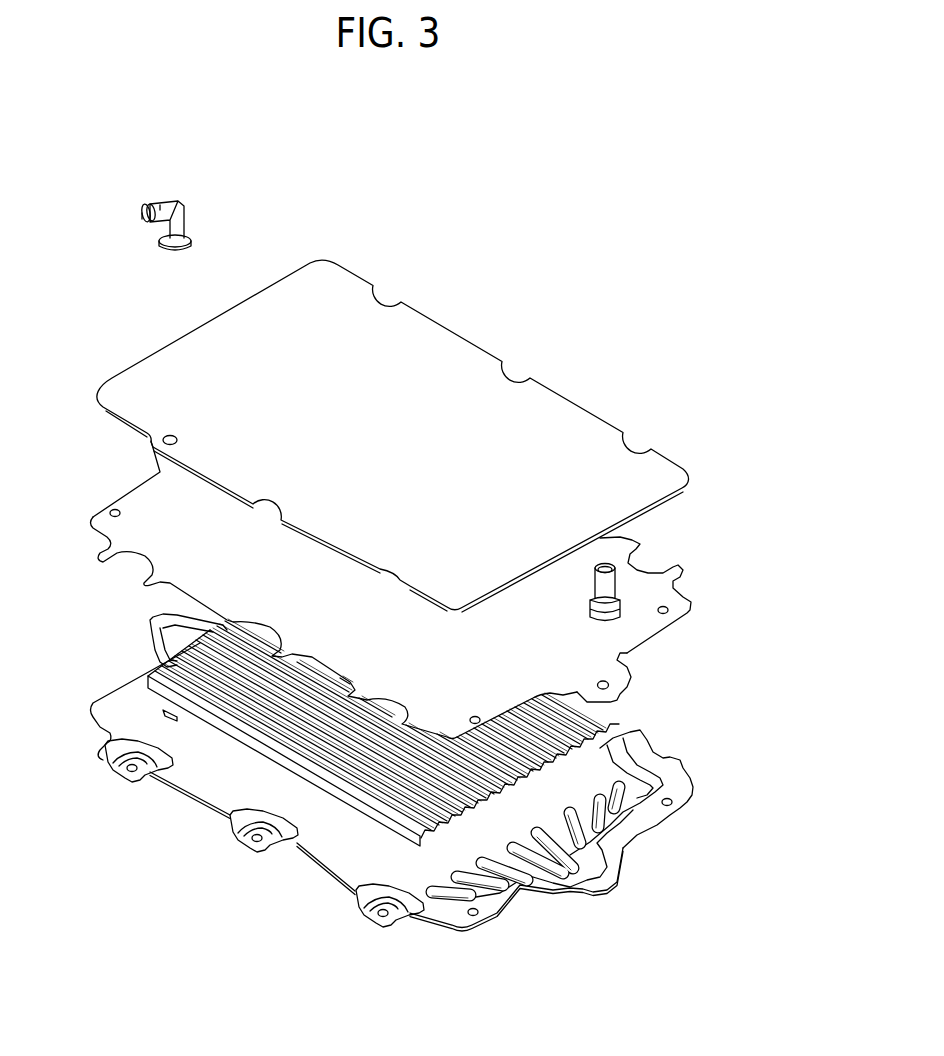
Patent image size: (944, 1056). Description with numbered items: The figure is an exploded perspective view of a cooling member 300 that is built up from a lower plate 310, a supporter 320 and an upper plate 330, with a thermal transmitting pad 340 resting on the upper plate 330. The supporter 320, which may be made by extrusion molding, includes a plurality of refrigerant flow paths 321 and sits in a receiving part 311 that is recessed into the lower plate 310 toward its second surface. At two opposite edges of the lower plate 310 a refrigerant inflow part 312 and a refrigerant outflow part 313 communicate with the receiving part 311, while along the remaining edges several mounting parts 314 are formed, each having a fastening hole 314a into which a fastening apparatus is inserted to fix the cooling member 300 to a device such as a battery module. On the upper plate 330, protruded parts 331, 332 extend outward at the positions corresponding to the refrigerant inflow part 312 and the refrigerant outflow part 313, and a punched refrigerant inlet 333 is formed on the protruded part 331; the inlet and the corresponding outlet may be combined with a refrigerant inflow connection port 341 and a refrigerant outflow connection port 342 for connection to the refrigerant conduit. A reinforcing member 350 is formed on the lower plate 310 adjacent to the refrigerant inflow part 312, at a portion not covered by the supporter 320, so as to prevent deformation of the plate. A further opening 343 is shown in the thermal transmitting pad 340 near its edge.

The cooling member 300 is at (93, 128).
The lower plate 310 is at (394, 812).
The receiving part 311 is at (368, 847).
The refrigerant inflow part 312 is at (637, 883).
The refrigerant outflow part 313 is at (150, 621).
The mounting part 314 is at (226, 820).
The fastening hole 314a is at (256, 843).
The supporter 320 is at (268, 750).
The refrigerant flow path 321 is at (450, 847).
The upper plate 330 is at (685, 550).
The protruded part 331 is at (613, 700).
The protruded part 332 is at (150, 454).
The refrigerant inlet 333 is at (610, 683).
The thermal transmitting pad 340 is at (551, 330).
The refrigerant inflow connection port 341 is at (614, 583).
The refrigerant outflow connection port 342 is at (176, 205).
The cover plate hole 343 is at (165, 436).
The reinforcing member 350 is at (578, 873).